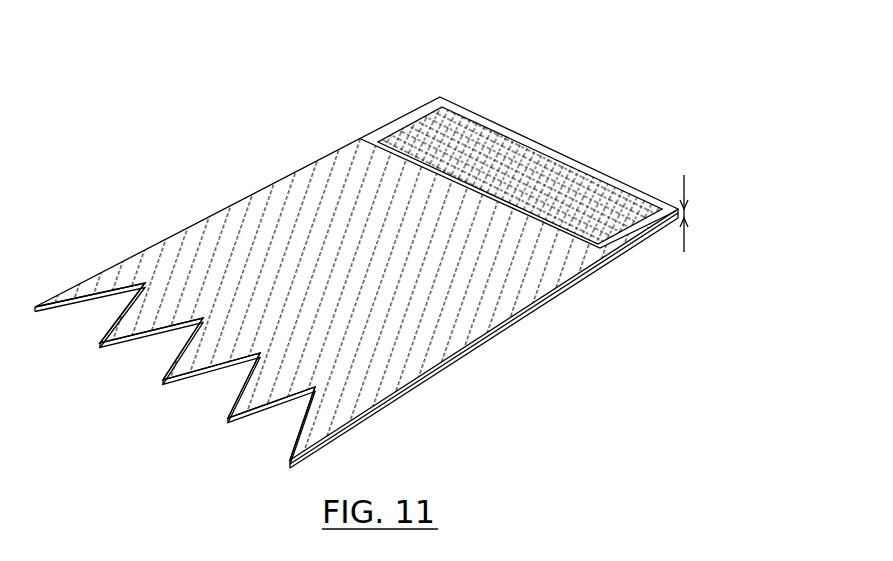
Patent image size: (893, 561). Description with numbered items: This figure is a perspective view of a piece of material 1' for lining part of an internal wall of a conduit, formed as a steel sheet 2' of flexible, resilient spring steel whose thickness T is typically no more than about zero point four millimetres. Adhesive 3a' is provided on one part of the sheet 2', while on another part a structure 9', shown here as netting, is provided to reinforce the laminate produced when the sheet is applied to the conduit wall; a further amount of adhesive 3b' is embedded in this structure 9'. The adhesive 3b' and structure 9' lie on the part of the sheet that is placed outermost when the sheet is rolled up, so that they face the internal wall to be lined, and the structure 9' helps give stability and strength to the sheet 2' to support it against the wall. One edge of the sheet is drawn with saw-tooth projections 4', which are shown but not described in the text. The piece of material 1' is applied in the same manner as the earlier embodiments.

The piece of material 1' is at (356, 268).
The steel sheet 2' is at (484, 338).
The adhesive 3a' is at (356, 278).
The adhesive 3b' is at (518, 171).
The saw-tooth projections 4' is at (175, 389).
The structure 9' is at (520, 143).
The thickness T is at (698, 211).